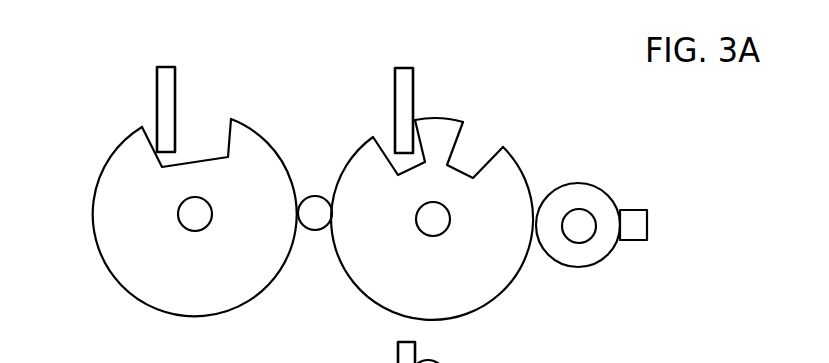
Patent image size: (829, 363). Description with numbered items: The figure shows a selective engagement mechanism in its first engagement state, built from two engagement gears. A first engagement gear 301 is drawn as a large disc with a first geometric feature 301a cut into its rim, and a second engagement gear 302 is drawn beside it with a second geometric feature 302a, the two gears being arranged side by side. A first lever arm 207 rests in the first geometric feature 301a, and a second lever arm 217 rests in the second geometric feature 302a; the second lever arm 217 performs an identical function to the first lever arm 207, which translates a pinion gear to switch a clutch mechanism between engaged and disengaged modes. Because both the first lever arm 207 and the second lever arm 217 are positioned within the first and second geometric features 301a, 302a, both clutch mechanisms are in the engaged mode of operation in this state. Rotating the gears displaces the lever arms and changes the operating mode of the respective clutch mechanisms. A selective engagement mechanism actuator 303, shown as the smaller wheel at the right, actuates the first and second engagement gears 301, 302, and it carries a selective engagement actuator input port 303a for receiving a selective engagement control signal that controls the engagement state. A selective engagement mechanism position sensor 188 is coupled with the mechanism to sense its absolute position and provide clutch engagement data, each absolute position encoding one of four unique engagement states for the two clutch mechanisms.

The first engagement gear 301 is at (138, 255).
The first geometric feature 301a is at (205, 133).
The first lever arm 207 is at (157, 97).
The second engagement gear 302 is at (385, 272).
The second geometric feature 302a is at (487, 133).
The second lever arm 217 is at (395, 103).
The selective engagement mechanism actuator 303 is at (608, 253).
The selective engagement mechanism position sensor 188 is at (578, 218).
The selective engagement actuator input port 303a is at (647, 222).